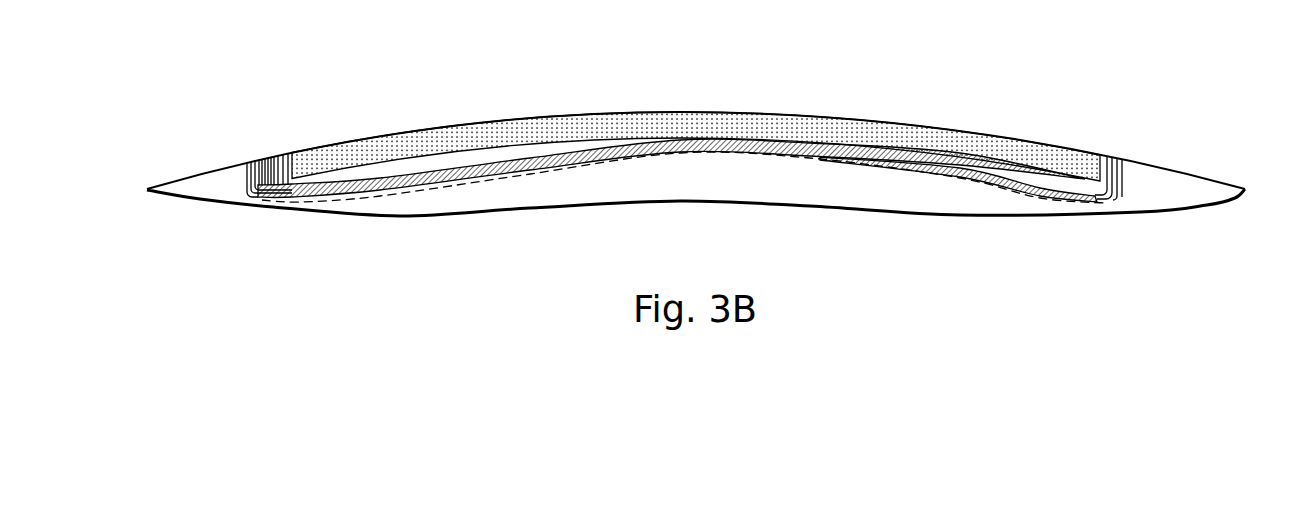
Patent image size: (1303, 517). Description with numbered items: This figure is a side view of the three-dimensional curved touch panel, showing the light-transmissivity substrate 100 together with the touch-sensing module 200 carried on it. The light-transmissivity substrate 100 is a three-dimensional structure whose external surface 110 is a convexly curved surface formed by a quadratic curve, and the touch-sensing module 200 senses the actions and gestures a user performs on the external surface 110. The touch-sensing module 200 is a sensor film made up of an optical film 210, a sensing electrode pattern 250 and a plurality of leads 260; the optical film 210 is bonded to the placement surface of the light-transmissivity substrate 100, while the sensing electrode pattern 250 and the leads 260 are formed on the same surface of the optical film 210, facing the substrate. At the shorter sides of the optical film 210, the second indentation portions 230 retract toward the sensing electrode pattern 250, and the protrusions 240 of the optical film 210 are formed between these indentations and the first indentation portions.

The light-transmissivity substrate 100 is at (723, 145).
The external surface 110 is at (175, 192).
The touch-sensing module 200 is at (642, 111).
The optical film 210 is at (217, 180).
The leads 260 is at (274, 163).
The sensing electrode pattern 250 is at (696, 126).
The second indentation portions 230 is at (568, 165).
The protrusions 240 is at (303, 203).